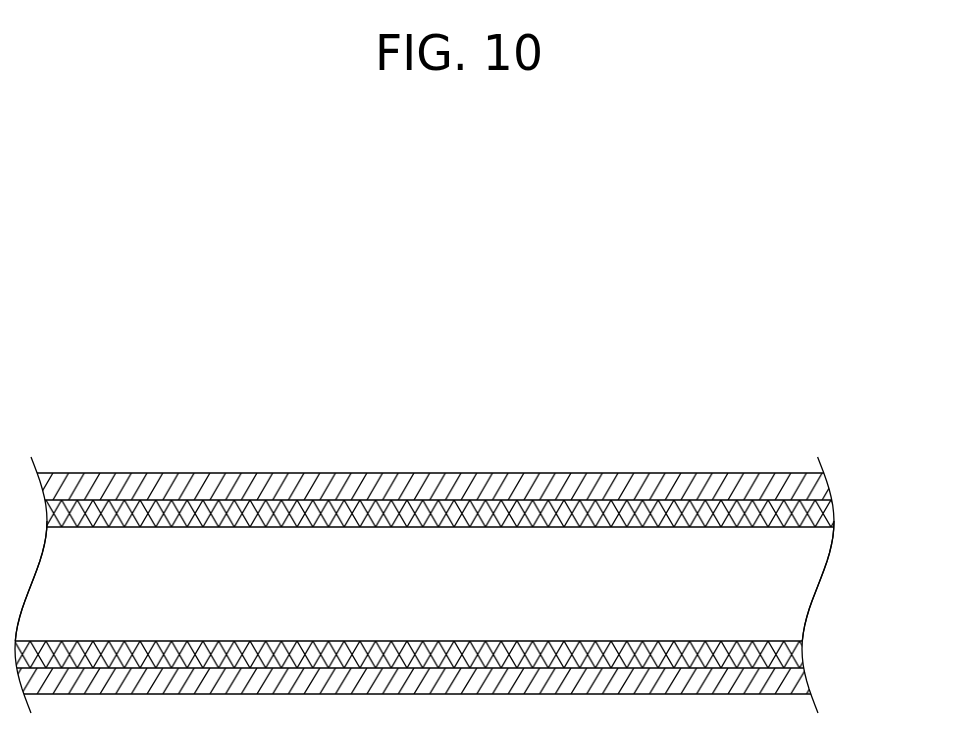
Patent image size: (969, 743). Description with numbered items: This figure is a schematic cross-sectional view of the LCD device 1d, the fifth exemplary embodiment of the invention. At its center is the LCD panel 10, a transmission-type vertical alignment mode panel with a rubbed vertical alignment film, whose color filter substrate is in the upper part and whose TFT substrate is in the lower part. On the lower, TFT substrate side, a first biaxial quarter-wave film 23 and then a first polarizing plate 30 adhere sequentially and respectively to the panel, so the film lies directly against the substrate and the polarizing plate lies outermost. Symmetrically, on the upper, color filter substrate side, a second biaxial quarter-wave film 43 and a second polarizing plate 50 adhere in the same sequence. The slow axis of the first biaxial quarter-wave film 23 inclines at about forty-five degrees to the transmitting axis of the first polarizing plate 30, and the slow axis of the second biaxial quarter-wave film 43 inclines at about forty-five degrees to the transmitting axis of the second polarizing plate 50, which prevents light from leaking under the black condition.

The LCD device 1d is at (76, 414).
The LCD panel 10 is at (800, 594).
The first biaxial λ/4 film 23 is at (803, 654).
The first polarizing plate 30 is at (806, 684).
The second biaxial λ/4 film 43 is at (833, 518).
The second polarizing plate 50 is at (828, 483).